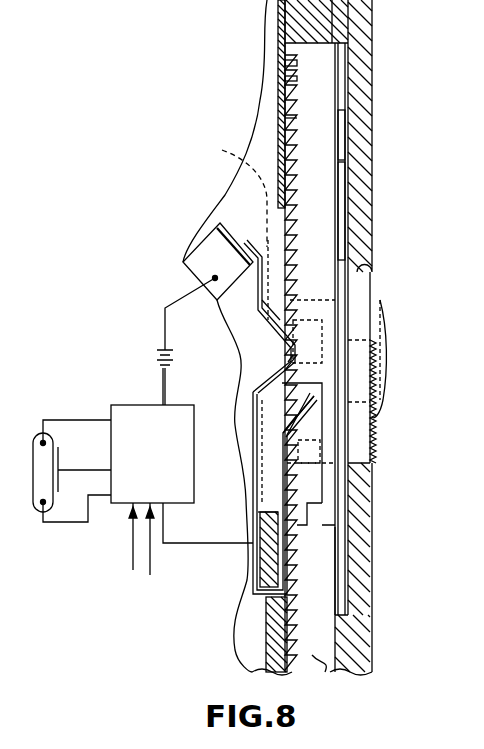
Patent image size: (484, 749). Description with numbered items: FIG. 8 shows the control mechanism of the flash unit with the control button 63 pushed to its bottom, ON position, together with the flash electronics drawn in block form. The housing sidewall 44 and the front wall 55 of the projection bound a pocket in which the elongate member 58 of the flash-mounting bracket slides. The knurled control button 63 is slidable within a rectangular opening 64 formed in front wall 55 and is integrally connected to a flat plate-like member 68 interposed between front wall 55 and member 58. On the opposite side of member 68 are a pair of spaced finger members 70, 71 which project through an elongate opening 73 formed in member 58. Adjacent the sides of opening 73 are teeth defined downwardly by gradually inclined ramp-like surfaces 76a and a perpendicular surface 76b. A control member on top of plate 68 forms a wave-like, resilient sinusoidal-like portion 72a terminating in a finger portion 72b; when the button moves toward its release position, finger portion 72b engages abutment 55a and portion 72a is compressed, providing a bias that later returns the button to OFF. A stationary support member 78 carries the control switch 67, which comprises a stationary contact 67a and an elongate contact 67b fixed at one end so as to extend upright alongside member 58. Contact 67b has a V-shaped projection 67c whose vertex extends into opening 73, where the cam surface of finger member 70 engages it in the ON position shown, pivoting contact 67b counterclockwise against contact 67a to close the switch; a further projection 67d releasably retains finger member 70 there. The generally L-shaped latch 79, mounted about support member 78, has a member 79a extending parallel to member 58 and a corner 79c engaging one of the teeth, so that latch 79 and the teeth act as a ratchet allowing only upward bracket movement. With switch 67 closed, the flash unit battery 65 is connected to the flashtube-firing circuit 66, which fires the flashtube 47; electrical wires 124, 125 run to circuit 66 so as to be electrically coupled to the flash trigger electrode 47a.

The sidewall 44 is at (277, 43).
The opening 73 is at (286, 63).
The abutment 55a is at (286, 78).
The ramp-like surface 76a is at (290, 100).
The perpendicular surface 76b is at (290, 118).
The control switch 67 is at (228, 205).
The stationary contact 67a is at (216, 222).
The elongate contact 67b is at (222, 150).
The V-shaped projection 67c is at (280, 337).
The projection 67d is at (280, 372).
The sinusoidal-like portion 72a is at (346, 190).
The finger portion 72b is at (346, 120).
The rectangular opening 64 is at (367, 265).
The finger member 70 is at (320, 347).
The control button 63 is at (381, 330).
The finger member 71 is at (313, 515).
The plate-like member 68 is at (343, 537).
The front wall 55 is at (371, 635).
The elongate member 58 is at (312, 655).
The latch 79 is at (262, 607).
The stationary support member 78 is at (262, 575).
The latch member 79a is at (260, 505).
The corner 79c is at (287, 430).
The flash unit battery 65 is at (157, 352).
The flashtube-firing circuit 66 is at (142, 405).
The flashtube 47 is at (33, 460).
The flash trigger electrode 47a is at (60, 462).
The electrical wire 124 is at (132, 557).
The electrical wire 125 is at (149, 575).